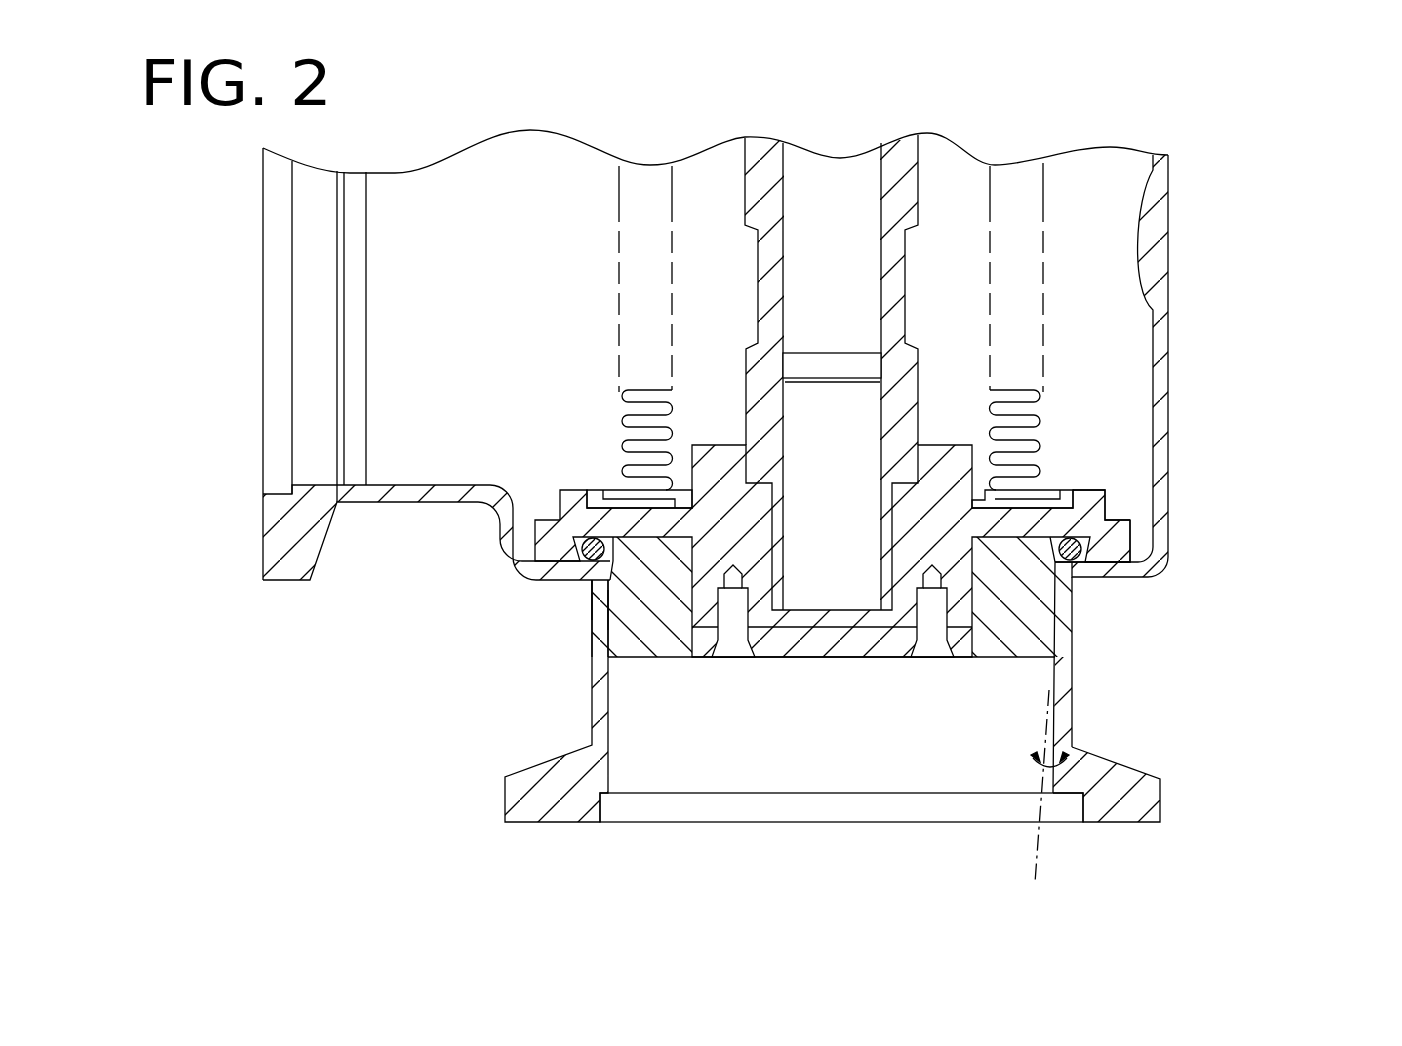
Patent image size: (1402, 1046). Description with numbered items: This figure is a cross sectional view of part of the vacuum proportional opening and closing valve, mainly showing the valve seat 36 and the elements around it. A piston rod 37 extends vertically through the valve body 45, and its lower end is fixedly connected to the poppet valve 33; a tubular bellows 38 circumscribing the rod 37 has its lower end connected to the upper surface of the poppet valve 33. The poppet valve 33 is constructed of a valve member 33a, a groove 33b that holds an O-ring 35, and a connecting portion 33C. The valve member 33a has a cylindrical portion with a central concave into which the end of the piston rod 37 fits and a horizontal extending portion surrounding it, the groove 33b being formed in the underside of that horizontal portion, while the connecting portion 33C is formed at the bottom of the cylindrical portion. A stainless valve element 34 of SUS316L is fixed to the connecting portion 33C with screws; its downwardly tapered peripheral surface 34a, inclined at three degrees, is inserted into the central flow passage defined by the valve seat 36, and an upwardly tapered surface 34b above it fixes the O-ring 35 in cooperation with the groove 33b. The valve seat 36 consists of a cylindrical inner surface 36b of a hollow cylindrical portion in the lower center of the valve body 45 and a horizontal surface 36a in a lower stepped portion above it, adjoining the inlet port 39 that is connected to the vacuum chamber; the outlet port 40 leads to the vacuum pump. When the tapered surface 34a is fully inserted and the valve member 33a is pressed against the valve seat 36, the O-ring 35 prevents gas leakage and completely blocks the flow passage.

The poppet valve 33 is at (552, 489).
The valve member 33a is at (1070, 522).
The groove 33b is at (1075, 537).
The connecting portion 33C is at (837, 617).
The stainless valve element 34 is at (596, 655).
The tapered surface 34a is at (1067, 627).
The upwardly tapered surface 34b is at (600, 537).
The O-ring 35 is at (575, 555).
The valve seat 36 is at (378, 652).
The horizontal surface 36a is at (592, 588).
The cylindrical inner surface 36b is at (595, 613).
The piston rod 37 is at (895, 268).
The tubular bellows 38 is at (1043, 413).
The inlet port 39 is at (607, 773).
The outlet port 40 is at (420, 491).
The valve body 45 is at (1155, 223).